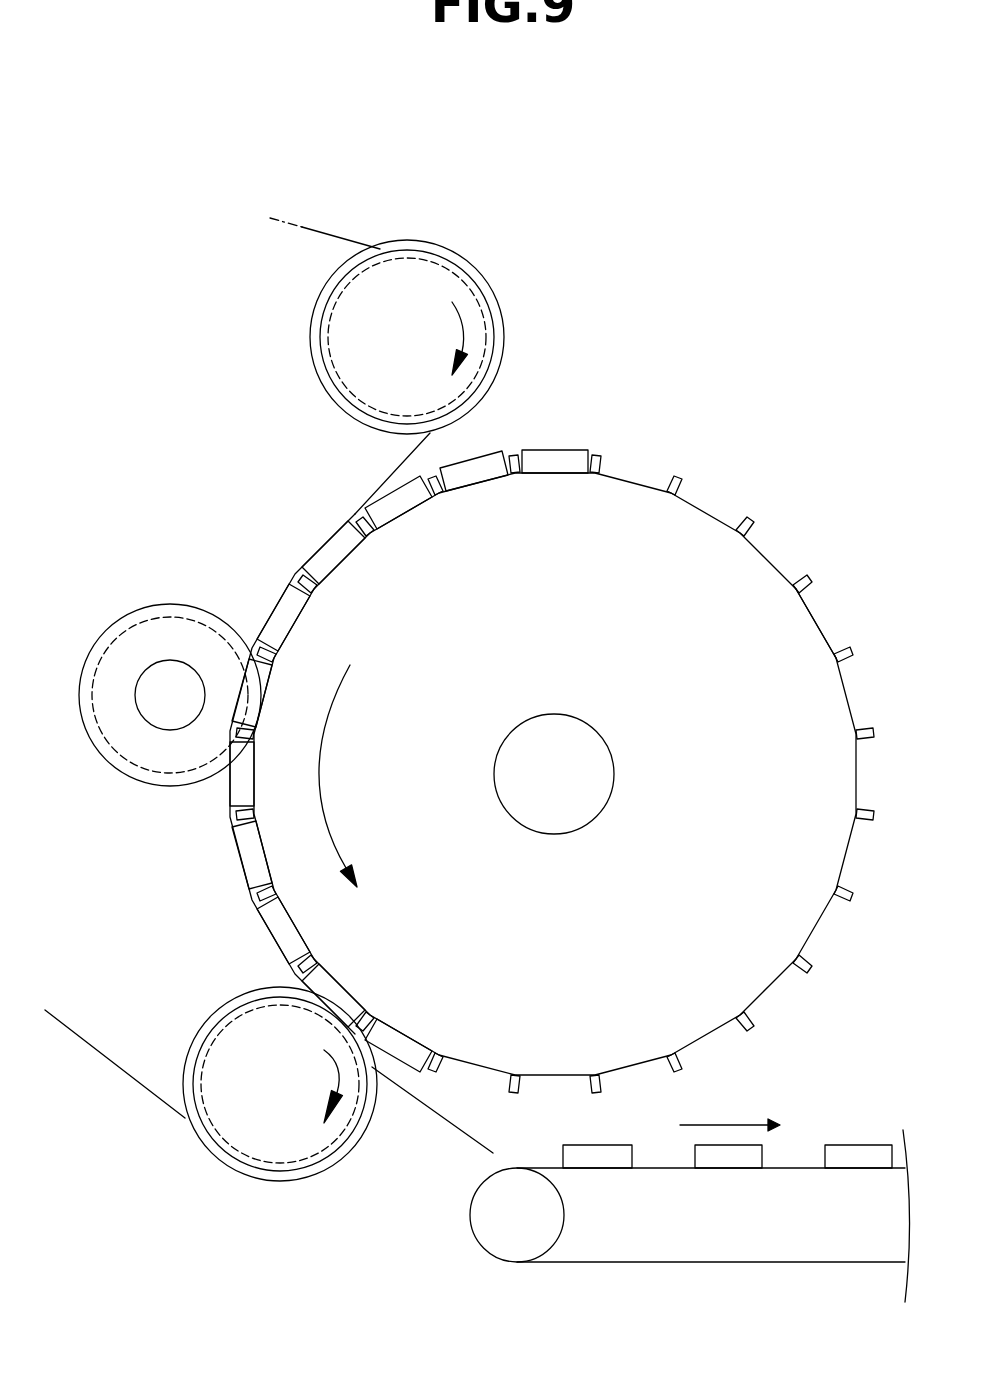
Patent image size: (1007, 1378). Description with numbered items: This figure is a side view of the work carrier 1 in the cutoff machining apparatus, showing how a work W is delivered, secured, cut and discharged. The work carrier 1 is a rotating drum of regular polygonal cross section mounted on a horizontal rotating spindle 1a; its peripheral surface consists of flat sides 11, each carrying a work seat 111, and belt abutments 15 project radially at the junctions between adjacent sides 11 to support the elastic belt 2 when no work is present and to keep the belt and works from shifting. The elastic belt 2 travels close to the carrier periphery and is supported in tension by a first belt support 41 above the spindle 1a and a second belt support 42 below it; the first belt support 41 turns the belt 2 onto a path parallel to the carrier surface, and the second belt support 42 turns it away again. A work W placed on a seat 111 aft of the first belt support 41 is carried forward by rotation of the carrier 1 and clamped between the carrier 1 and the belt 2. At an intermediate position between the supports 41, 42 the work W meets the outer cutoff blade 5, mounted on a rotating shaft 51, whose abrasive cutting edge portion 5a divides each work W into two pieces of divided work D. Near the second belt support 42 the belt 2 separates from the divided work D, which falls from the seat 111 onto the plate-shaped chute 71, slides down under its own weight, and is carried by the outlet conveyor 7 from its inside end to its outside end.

The work carrier 1 is at (599, 764).
The rotating spindle 1a is at (562, 764).
The surface side 11 is at (828, 644).
The work seat 111 is at (817, 623).
The belt abutment 15 is at (809, 580).
The elastic belt 2 is at (276, 694).
The first belt support 41 is at (428, 297).
The second belt support 42 is at (285, 1123).
The outer cutoff blade 5 is at (170, 648).
The abrasive cutting edge portion 5a is at (207, 618).
The rotating shaft 51 is at (170, 682).
The outlet conveyor 7 is at (727, 1225).
The chute 71 is at (418, 1100).
The work W is at (555, 460).
The divided work D is at (393, 1063).